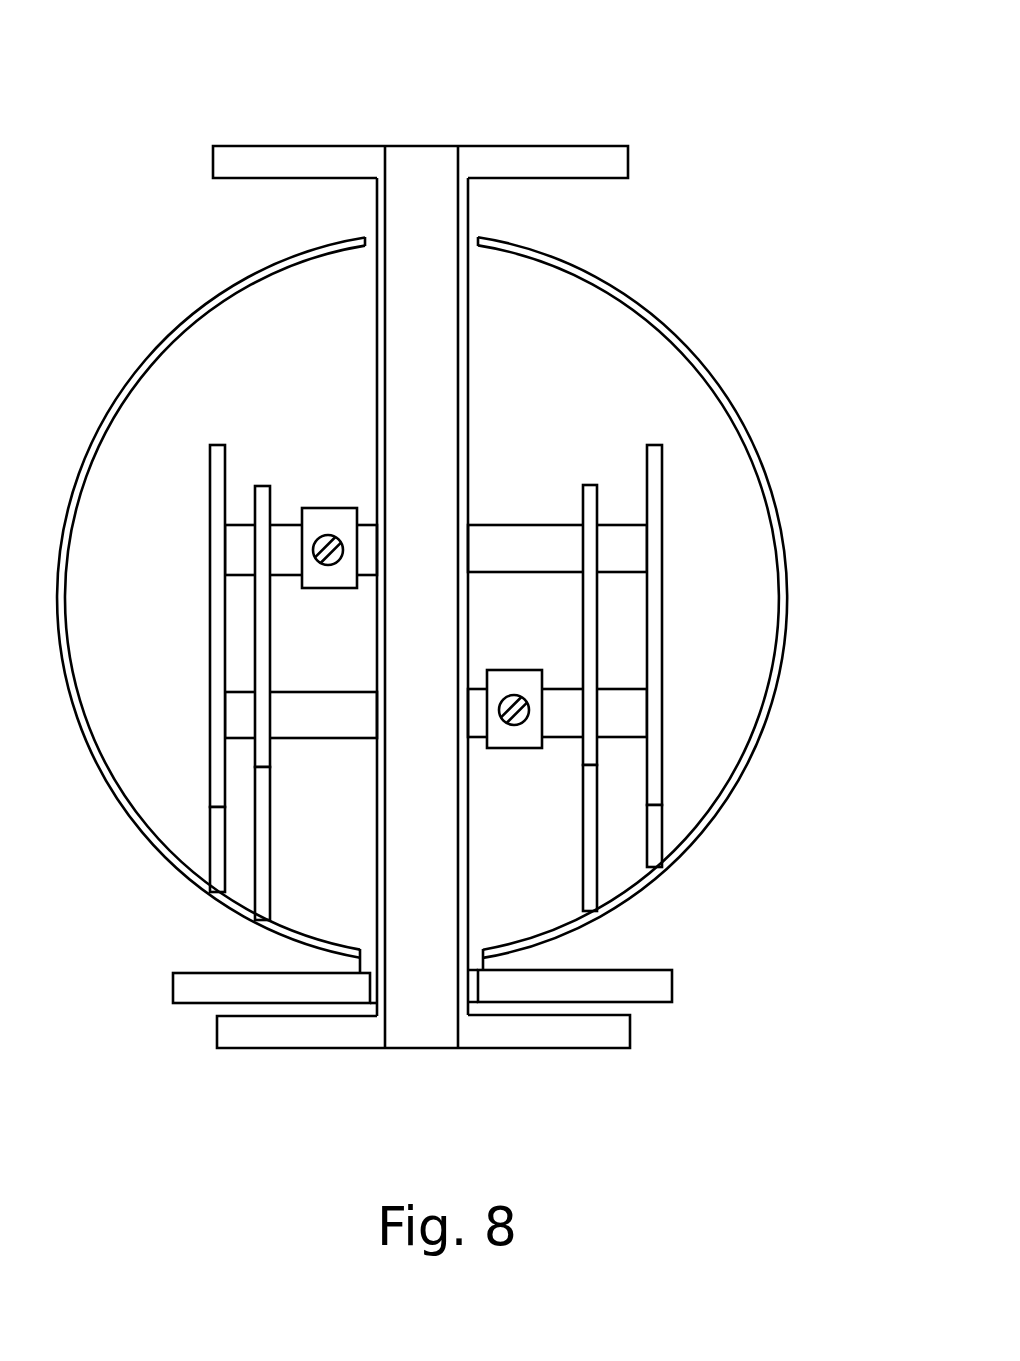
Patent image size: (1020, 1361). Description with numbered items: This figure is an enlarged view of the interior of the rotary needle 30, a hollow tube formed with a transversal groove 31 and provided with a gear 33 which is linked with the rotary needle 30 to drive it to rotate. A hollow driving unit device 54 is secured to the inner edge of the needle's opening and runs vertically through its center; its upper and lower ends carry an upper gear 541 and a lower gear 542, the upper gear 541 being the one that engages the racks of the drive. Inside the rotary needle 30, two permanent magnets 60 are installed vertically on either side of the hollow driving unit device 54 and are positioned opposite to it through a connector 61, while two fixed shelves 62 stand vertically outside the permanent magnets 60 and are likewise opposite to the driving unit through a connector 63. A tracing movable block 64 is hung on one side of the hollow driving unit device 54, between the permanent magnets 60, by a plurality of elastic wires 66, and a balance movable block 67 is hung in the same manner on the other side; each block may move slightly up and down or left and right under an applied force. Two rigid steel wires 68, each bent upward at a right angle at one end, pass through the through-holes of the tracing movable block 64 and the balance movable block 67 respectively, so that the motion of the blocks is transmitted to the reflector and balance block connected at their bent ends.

The rotary needle 30 is at (738, 425).
The transversal groove 31 is at (471, 236).
The gear 33 is at (660, 982).
The hollow driving unit device 54 is at (512, 136).
The upper gear 541 is at (613, 158).
The lower gear 542 is at (282, 1038).
The permanent magnet 60 is at (262, 503).
The connector 61 is at (262, 833).
The fixed shelf 62 is at (215, 467).
The connector 63 is at (220, 835).
The tracing movable block 64 is at (335, 588).
The elastic wire 66 is at (498, 523).
The balance movable block 67 is at (518, 750).
The steel wire 68 is at (330, 540).